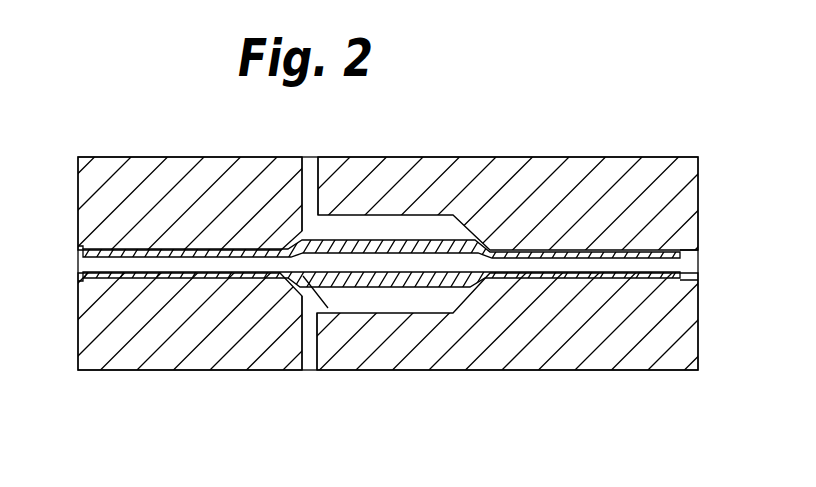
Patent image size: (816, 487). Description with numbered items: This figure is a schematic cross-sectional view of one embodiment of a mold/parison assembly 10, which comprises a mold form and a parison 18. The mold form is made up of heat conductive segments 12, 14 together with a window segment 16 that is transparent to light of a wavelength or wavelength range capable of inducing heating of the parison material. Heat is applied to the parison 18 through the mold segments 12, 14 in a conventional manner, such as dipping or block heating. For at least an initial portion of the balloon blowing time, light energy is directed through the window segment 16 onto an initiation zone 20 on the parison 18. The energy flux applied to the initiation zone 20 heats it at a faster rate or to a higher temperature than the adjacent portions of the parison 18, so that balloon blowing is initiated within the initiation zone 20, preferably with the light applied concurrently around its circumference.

The assembly 10 is at (530, 394).
The heat conductive segment 12 is at (542, 170).
The heat conductive segment 14 is at (145, 373).
The window segment 16 is at (312, 206).
The parison 18 is at (418, 292).
The initiation zone 20 is at (328, 312).